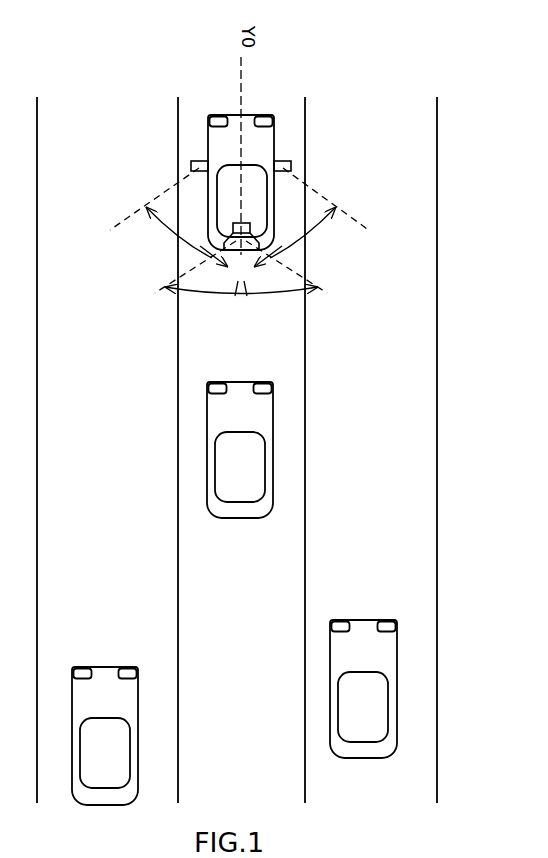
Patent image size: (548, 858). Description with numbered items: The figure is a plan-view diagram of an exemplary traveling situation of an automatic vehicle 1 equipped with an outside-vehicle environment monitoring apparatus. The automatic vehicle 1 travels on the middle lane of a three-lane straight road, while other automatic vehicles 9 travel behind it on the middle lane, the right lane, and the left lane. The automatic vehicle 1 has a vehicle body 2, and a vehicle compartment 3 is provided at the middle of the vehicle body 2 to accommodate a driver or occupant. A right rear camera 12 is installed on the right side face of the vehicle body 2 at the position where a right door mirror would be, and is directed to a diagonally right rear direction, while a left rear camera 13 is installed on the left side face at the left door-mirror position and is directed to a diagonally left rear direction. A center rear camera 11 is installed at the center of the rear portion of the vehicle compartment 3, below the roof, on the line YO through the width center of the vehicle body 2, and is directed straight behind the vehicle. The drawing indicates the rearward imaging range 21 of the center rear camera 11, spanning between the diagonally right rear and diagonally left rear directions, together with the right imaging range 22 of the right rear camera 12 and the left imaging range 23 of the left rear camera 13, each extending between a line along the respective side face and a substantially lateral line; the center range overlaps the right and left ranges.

The automatic vehicle 1 is at (197, 100).
The vehicle body 2 is at (208, 130).
The vehicle compartment 3 is at (276, 160).
The other automatic vehicles 9 is at (270, 420).
The center rear camera 11 is at (252, 226).
The right rear camera 12 is at (292, 167).
The left rear camera 13 is at (193, 165).
The front detection range 21 is at (210, 297).
The right detection range 22 is at (310, 238).
The left detection range 23 is at (172, 240).